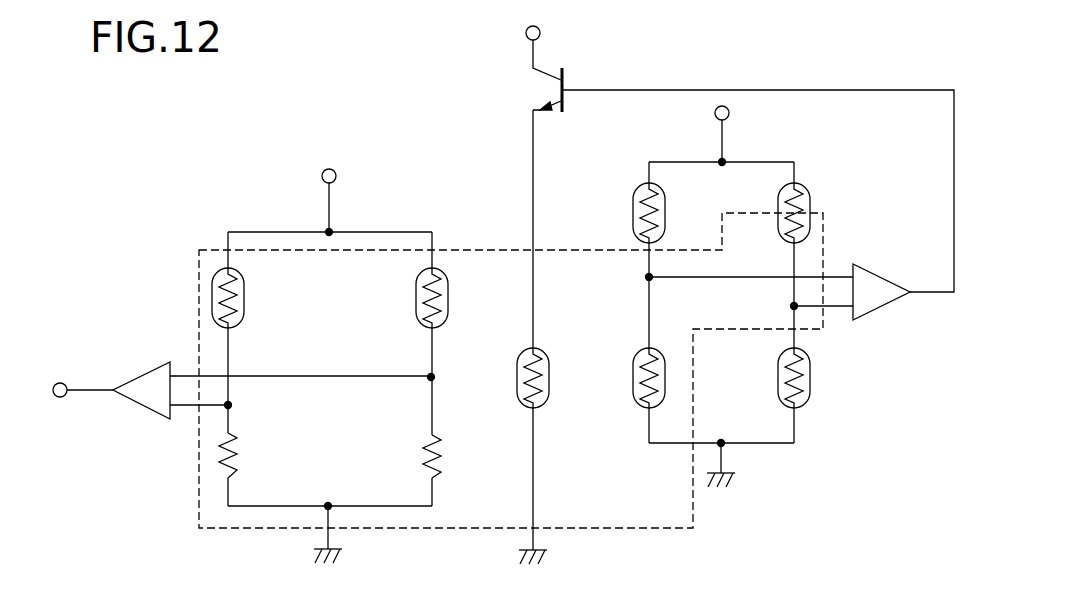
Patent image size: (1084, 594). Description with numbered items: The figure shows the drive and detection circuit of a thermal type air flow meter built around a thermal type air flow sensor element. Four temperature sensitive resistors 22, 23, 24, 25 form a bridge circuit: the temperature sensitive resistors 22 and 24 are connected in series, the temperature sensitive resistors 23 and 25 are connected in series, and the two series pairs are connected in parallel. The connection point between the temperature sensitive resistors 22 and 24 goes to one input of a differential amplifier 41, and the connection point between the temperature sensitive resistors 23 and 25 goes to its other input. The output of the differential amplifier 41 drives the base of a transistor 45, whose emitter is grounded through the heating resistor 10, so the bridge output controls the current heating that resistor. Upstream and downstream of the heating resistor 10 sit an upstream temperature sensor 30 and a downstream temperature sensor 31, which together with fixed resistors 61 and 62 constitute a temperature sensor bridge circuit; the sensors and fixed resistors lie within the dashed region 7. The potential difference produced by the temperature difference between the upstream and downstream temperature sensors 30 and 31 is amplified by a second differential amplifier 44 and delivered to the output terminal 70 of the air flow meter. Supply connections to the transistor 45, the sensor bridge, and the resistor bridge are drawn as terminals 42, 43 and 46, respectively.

The sensor chip (dashed region) 7 is at (197, 271).
The heating resistor 10 is at (516, 378).
The temperature sensitive resistor 22 is at (632, 213).
The temperature sensitive resistor 23 is at (811, 196).
The temperature sensitive resistor 24 is at (632, 378).
The temperature sensitive resistor 25 is at (811, 390).
The upstream temperature sensor 30 is at (245, 306).
The downstream temperature sensor 31 is at (415, 296).
The differential amplifier 41 is at (893, 303).
The power supply terminal 42 is at (541, 33).
The power supply terminal 43 is at (320, 176).
The differential amplifier 44 is at (147, 412).
The transistor 45 is at (530, 88).
The power supply terminal 46 is at (713, 114).
The fixed resistor 61 is at (239, 457).
The fixed resistor 62 is at (420, 466).
The output terminal 70 is at (61, 398).